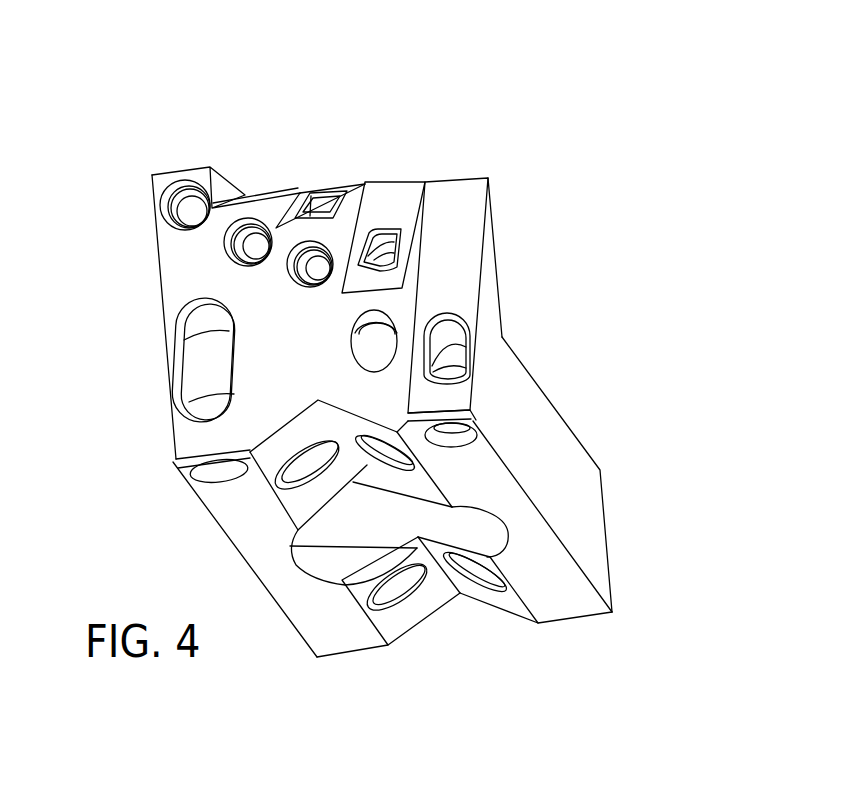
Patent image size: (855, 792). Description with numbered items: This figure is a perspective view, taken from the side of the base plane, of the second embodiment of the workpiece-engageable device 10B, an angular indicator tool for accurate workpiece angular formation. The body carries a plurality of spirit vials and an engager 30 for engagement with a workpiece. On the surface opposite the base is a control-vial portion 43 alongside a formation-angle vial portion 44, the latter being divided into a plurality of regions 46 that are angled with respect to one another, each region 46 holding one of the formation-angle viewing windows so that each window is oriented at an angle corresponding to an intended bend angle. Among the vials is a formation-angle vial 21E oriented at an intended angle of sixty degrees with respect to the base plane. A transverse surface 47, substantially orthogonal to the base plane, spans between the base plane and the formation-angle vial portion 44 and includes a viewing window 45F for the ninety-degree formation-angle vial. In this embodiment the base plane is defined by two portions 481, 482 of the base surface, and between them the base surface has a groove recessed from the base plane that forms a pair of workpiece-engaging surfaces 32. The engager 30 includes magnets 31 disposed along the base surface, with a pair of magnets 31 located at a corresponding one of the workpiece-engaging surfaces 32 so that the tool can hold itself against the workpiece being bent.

The workpiece-engageable device 10B is at (663, 237).
The formation-angle vial 21E is at (448, 354).
The engager 30 is at (385, 595).
The magnets 31 is at (380, 460).
The workpiece-engaging surfaces 32 is at (507, 607).
The control-vial portion 43 is at (568, 461).
The formation-angle vial portion 44 is at (180, 182).
The viewing window 45F is at (202, 363).
The regions 46 is at (458, 196).
The transverse surface 47 is at (172, 266).
The portion of base surface 481 is at (357, 642).
The portion of base surface 482 is at (570, 603).